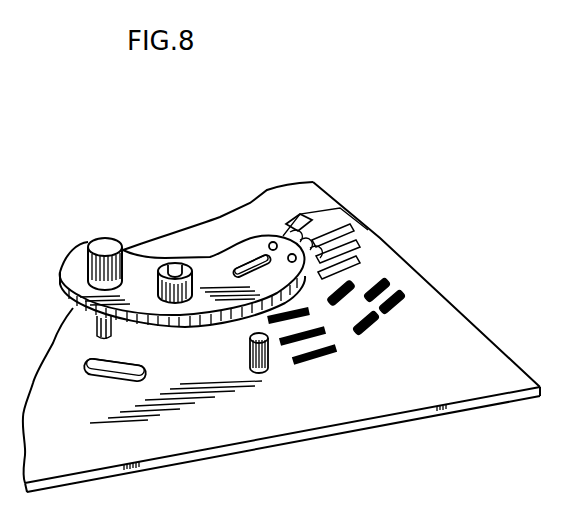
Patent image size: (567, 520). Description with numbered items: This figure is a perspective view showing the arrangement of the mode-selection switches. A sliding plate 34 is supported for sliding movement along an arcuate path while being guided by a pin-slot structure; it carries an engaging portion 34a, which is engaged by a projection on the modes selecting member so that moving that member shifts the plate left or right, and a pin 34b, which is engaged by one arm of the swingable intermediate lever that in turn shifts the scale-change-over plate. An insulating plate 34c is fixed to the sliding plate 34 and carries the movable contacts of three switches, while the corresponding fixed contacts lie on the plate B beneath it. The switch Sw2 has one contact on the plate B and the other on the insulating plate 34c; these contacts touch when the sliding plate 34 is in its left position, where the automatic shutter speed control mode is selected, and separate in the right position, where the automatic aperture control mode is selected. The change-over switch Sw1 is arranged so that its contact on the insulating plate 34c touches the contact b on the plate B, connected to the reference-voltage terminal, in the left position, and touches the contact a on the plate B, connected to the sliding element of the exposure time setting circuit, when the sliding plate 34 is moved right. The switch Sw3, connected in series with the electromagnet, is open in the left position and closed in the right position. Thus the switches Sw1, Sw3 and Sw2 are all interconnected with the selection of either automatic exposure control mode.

The sliding plate 34 is at (213, 267).
The engaging portion 34a is at (154, 265).
The pin 34b is at (105, 245).
The insulating plate 34c is at (291, 232).
The change-over switch Sw1 is at (406, 296).
The switch Sw2 is at (347, 284).
The switch Sw3 is at (375, 282).
The contact a is at (400, 300).
The contact b is at (370, 328).
The plate B is at (373, 403).